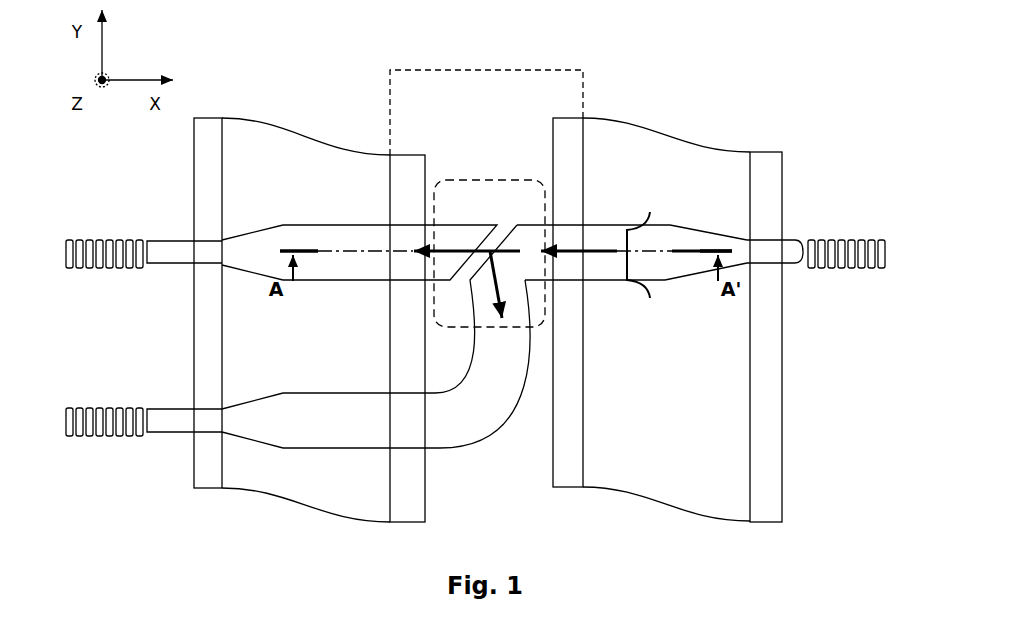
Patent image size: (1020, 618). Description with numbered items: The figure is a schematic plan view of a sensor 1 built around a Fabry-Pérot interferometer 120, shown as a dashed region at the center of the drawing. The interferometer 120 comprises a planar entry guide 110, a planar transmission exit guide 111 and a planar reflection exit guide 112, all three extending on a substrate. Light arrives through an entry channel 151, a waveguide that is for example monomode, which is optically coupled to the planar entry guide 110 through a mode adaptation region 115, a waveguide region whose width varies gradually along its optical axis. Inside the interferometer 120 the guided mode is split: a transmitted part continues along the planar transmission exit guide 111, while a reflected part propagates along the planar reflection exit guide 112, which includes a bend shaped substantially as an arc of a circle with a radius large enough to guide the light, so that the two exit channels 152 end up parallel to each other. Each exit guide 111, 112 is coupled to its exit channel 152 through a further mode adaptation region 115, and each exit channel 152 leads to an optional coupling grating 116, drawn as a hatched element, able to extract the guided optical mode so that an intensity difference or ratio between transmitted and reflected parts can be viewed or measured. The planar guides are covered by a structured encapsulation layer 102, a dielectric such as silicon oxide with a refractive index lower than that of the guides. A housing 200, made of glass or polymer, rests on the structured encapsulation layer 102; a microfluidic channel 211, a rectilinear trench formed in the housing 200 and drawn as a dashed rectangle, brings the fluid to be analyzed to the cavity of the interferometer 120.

The sensor 1 is at (674, 102).
The structured encapsulation layer 102 is at (565, 478).
The housing 200 is at (694, 475).
The microfluidic channel 211 is at (486, 68).
The Fabry-Pérot interferometer 120 is at (486, 178).
The planar transmission exit guide 111 is at (311, 231).
The planar reflection exit guide 112 is at (506, 364).
The mode adaptation region 115 is at (247, 254).
The exit channel 152 is at (180, 259).
The entry channel 151 is at (773, 247).
The coupling grating 116 is at (97, 256).
The planar entry guide 110 is at (615, 270).